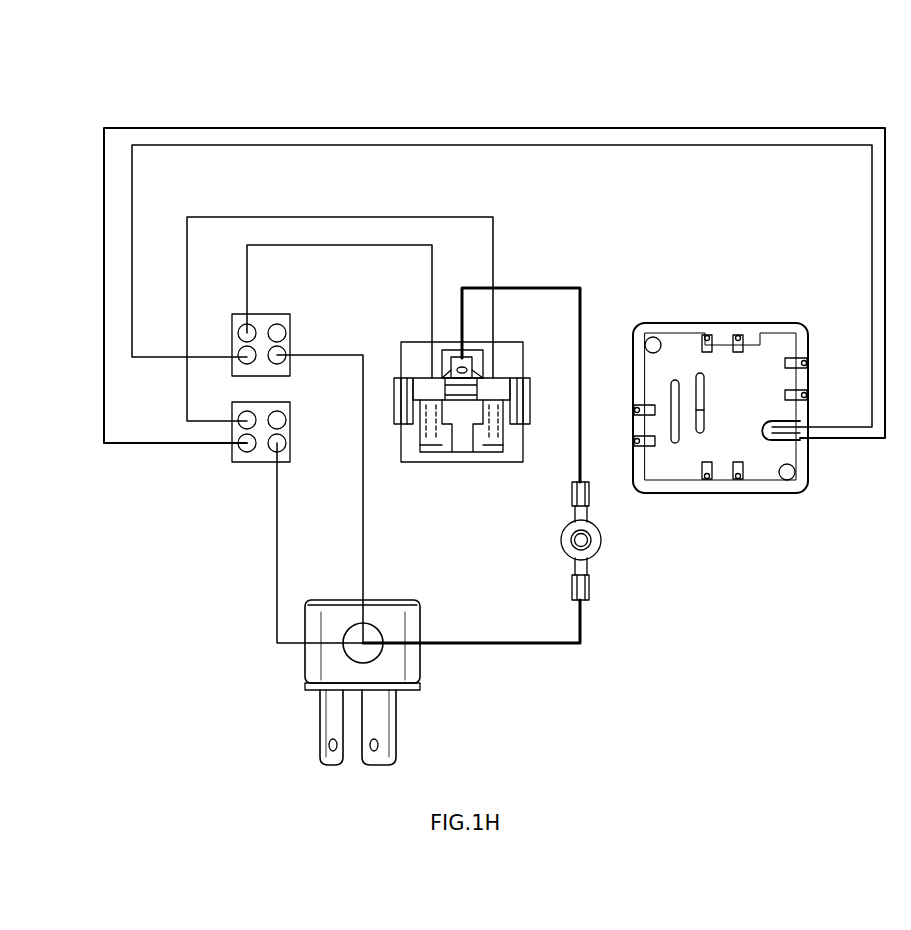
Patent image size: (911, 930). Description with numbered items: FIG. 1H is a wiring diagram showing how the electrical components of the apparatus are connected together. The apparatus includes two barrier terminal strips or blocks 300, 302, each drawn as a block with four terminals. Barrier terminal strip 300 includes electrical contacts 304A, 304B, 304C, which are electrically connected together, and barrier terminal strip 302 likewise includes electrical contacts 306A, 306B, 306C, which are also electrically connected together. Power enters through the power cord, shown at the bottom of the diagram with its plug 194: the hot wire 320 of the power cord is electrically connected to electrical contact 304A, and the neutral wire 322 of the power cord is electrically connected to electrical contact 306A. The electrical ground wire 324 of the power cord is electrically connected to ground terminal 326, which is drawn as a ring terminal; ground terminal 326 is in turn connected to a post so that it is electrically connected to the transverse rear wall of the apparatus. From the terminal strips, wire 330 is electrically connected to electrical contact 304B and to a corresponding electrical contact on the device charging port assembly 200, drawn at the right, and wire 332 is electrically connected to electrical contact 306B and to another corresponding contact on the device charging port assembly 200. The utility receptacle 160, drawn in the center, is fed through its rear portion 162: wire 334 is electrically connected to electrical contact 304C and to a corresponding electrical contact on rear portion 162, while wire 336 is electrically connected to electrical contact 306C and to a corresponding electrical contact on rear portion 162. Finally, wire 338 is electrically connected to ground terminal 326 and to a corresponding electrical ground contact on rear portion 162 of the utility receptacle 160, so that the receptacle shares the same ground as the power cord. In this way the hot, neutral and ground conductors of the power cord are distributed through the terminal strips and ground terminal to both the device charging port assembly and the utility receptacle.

The wire 330 is at (168, 127).
The wire 332 is at (563, 145).
The wire 334 is at (477, 217).
The wire 336 is at (270, 245).
The wire 338 is at (543, 290).
The neutral wire 322 is at (362, 530).
The hot wire 320 is at (277, 598).
The electrical ground wire 324 is at (493, 648).
The barrier terminal strip 302 is at (200, 276).
The barrier terminal strip 300 is at (229, 481).
The electrical contact 306A is at (277, 355).
The electrical contact 306B is at (247, 355).
The electrical contact 306C is at (247, 333).
The electrical contact 304A is at (217, 498).
The electrical contact 304B is at (247, 443).
The electrical contact 304C is at (247, 420).
The utility receptacle 160 is at (460, 457).
The rear portion of utility receptacle 162 is at (513, 452).
The ground terminal 326 is at (590, 566).
The device charging port assembly 200 is at (748, 462).
The power plug 194 is at (305, 668).